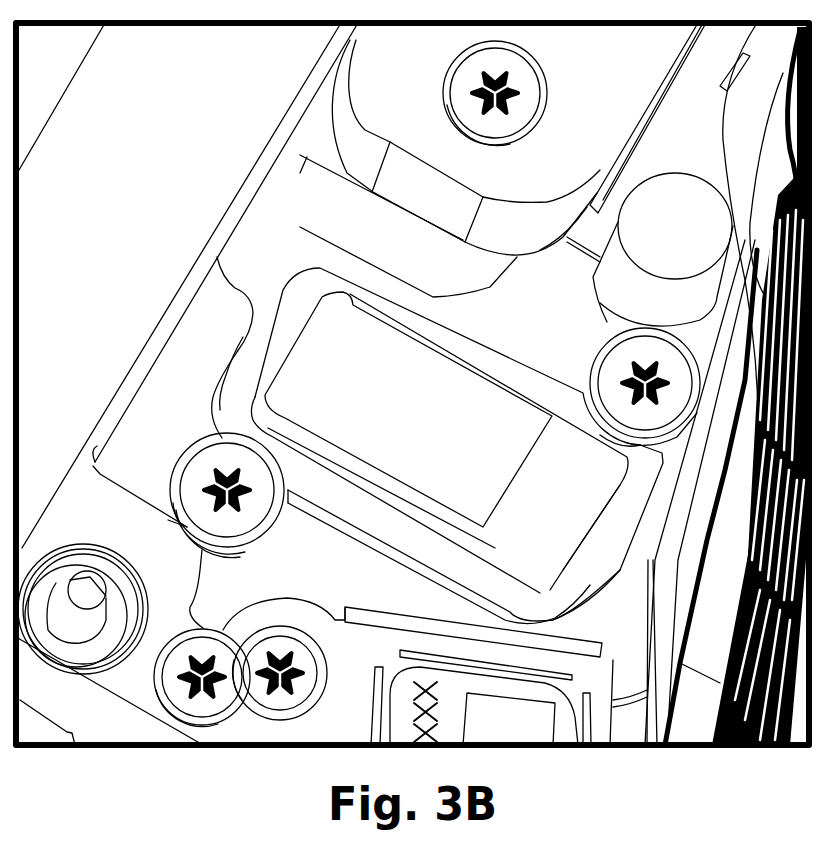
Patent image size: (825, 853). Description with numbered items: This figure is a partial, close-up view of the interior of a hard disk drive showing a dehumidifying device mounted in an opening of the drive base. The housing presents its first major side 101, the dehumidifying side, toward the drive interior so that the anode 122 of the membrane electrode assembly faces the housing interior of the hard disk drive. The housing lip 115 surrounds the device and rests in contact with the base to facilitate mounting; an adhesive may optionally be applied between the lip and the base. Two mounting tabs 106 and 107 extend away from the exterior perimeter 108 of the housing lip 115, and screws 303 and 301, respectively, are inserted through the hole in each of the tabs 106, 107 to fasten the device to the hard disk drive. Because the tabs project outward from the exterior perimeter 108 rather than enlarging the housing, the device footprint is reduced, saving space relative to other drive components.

The first major side 101 is at (575, 501).
The anode 122 is at (424, 428).
The screw 301 is at (242, 518).
The screw 303 is at (612, 352).
The mounting tab 106 is at (664, 453).
The mounting tab 107 is at (283, 522).
The housing lip 115 is at (627, 546).
The exterior perimeter 108 is at (624, 572).